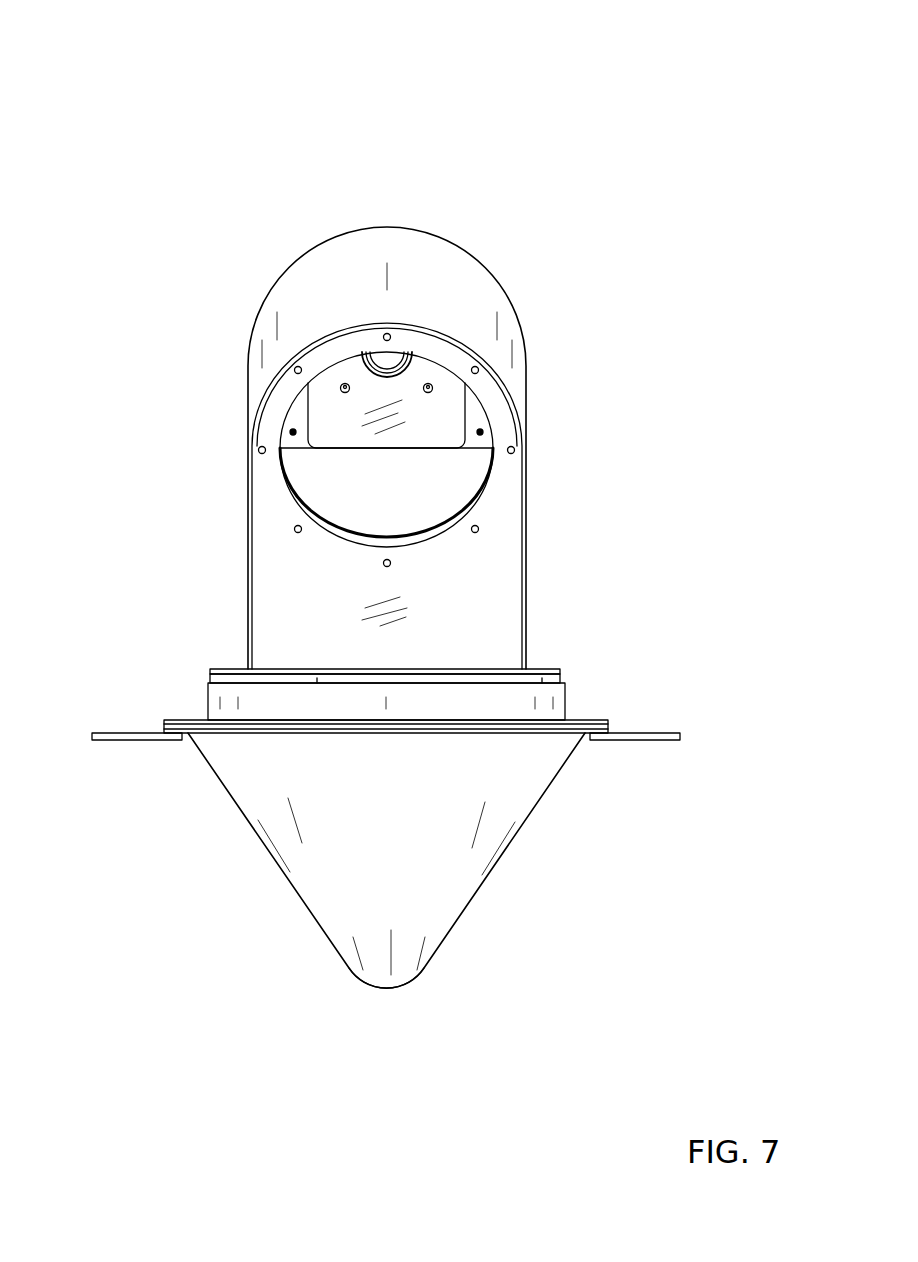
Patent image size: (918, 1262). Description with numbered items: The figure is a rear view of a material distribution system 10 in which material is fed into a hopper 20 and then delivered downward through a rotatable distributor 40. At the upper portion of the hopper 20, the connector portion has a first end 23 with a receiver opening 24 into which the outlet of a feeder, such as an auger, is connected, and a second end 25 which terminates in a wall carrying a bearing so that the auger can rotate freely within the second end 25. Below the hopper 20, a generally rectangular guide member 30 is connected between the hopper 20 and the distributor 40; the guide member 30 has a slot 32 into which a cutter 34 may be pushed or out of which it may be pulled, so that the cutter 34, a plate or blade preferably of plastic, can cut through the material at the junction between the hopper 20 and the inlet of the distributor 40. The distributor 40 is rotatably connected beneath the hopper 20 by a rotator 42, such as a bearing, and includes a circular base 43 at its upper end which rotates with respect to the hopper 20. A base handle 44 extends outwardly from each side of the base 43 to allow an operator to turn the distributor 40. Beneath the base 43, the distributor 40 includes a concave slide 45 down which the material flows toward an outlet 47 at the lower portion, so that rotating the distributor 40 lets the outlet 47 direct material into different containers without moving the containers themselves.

The material distribution system 10 is at (147, 118).
The hopper 20 is at (517, 305).
The first end 23 is at (490, 578).
The receiver opening 24 is at (478, 504).
The second end 25 is at (345, 433).
The guide member 30 is at (557, 667).
The slot 32 is at (240, 676).
The cutter 34 is at (276, 678).
The distributor 40 is at (505, 858).
The rotator 42 is at (207, 702).
The base 43 is at (590, 714).
The base handle 44 is at (105, 741).
The slide 45 is at (390, 853).
The outlet 47 is at (407, 987).